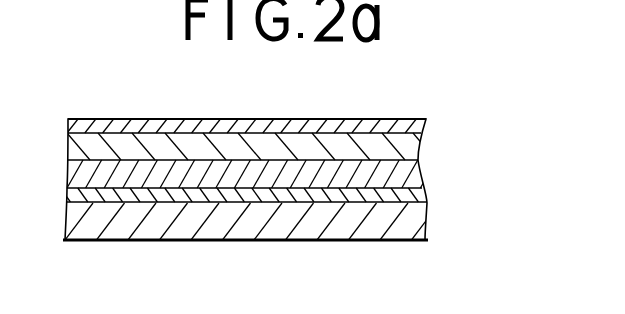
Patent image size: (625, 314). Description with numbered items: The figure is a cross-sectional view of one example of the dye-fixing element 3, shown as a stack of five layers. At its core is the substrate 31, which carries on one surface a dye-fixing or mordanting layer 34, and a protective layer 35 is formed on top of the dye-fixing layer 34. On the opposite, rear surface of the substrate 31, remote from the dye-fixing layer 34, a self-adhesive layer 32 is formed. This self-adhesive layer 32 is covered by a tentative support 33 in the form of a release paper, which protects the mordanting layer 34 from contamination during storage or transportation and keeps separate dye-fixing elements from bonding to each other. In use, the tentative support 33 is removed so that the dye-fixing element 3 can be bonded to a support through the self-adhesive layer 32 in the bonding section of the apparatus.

The dye-fixing element 3 is at (402, 91).
The substrate 31 is at (407, 175).
The self-adhesive layer 32 is at (413, 193).
The tentative support 33 is at (417, 237).
The dye-fixing layer 34 is at (412, 149).
The protective layer 35 is at (425, 123).